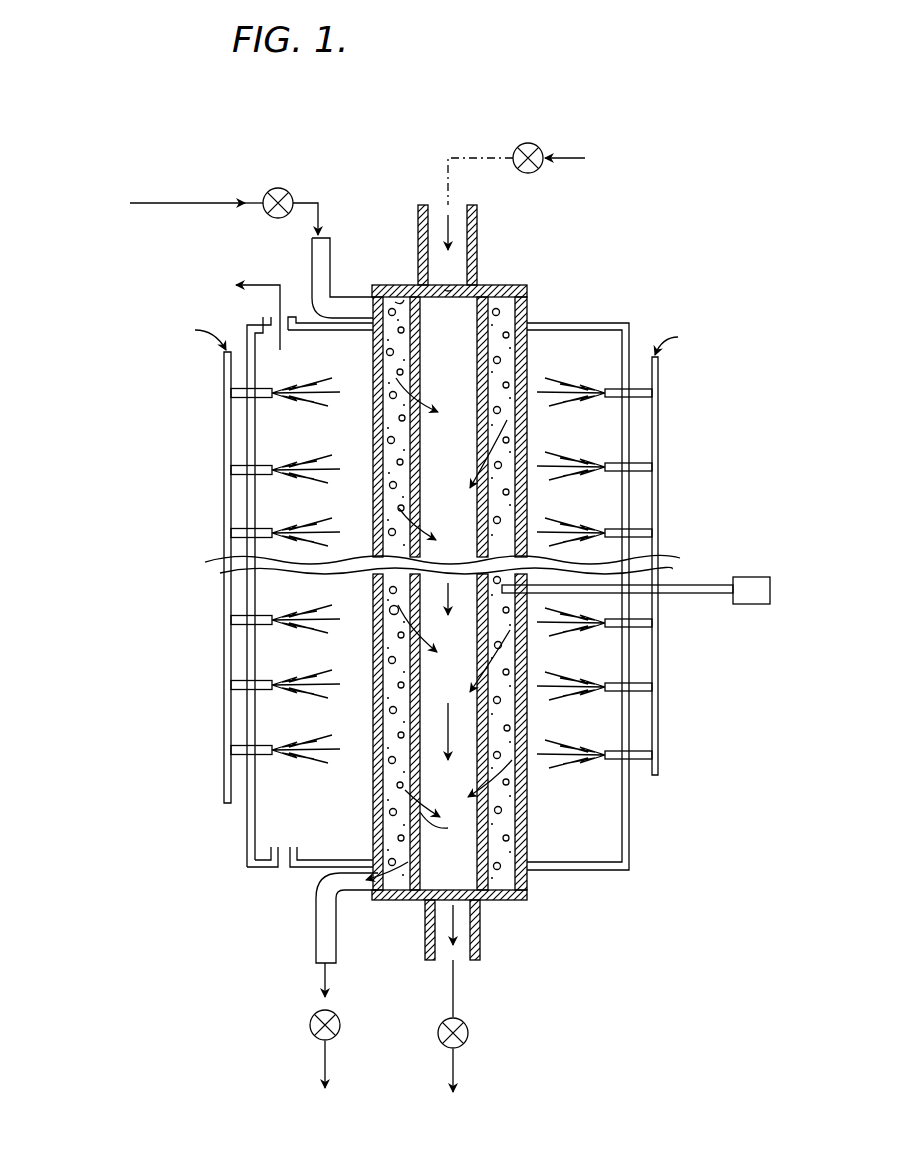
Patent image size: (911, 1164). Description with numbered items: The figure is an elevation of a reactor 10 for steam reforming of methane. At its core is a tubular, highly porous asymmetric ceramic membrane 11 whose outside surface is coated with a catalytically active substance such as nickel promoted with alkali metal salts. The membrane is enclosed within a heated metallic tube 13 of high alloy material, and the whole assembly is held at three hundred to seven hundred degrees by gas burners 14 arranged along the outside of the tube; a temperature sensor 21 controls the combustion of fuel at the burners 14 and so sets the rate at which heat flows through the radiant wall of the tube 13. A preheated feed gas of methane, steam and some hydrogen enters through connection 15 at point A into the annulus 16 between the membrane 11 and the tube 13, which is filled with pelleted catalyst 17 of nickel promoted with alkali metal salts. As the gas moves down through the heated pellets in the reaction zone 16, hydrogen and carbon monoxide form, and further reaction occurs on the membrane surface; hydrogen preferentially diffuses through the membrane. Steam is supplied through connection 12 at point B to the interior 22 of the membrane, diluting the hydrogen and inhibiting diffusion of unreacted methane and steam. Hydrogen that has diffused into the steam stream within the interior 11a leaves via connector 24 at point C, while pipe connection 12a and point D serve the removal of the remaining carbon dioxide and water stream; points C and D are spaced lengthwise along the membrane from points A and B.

The reactor 10 is at (636, 305).
The ceramic membrane 11 is at (530, 364).
The interior of the membrane 11a is at (452, 466).
The connection 12 is at (448, 228).
The pipe connection 12a is at (428, 937).
The heated metallic tube 13 is at (375, 363).
The gas burners 14 is at (605, 452).
The connection 15 is at (345, 307).
The annulus 16 is at (393, 423).
The catalyst 17 is at (389, 610).
The temperature sensor 21 is at (552, 598).
The interior of the membrane 22 is at (456, 331).
The connector 24 is at (488, 922).
The point A is at (400, 300).
The point B is at (448, 290).
The point C is at (444, 802).
The point D is at (352, 882).